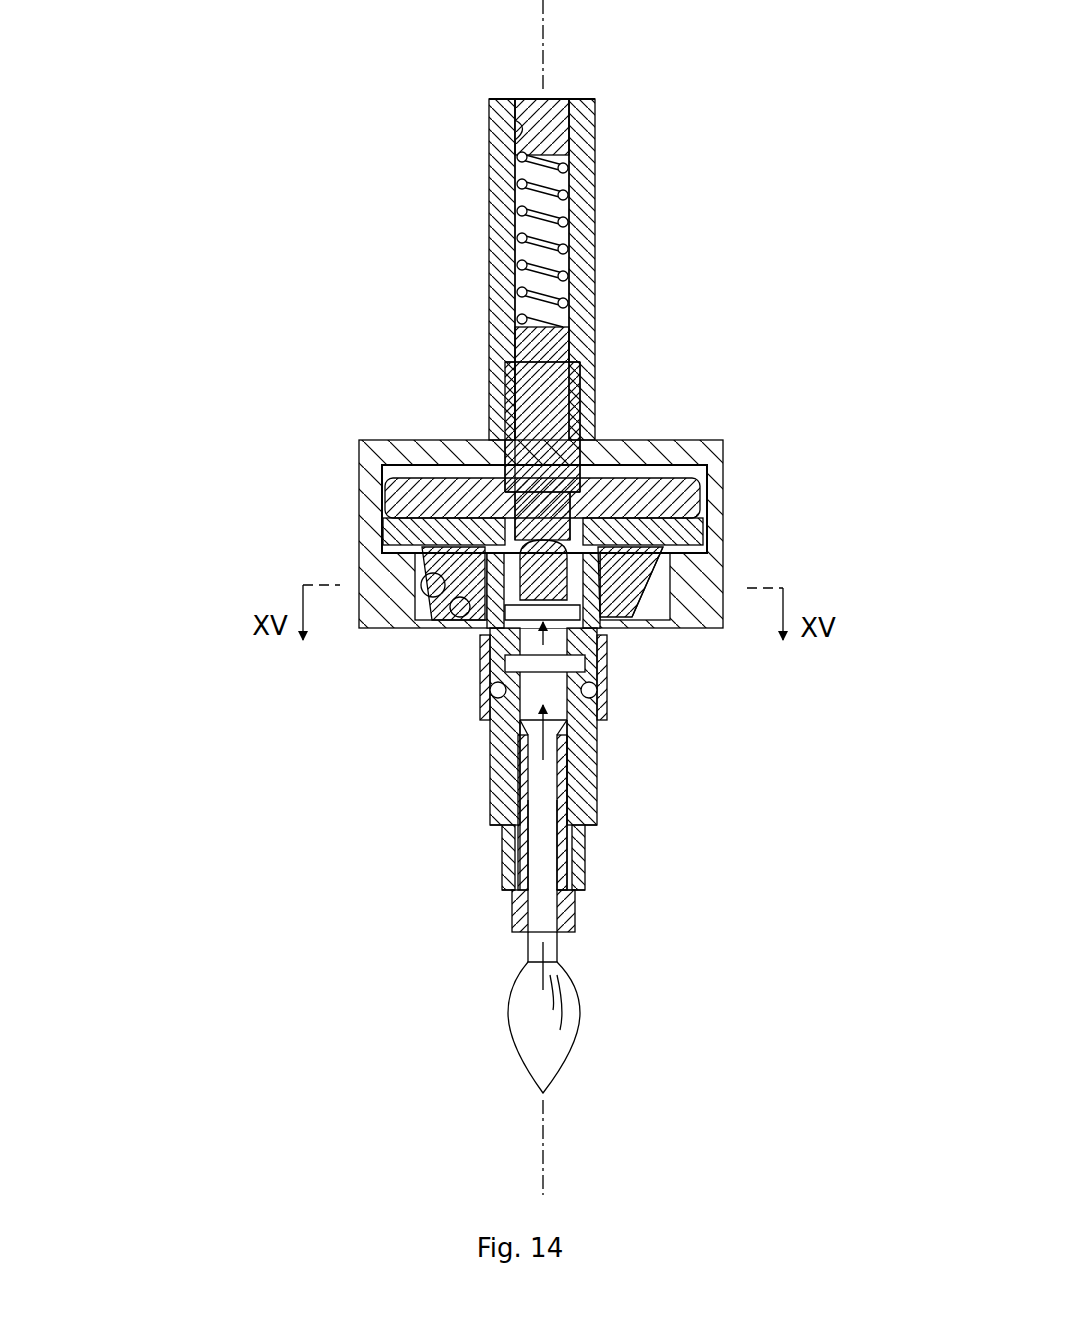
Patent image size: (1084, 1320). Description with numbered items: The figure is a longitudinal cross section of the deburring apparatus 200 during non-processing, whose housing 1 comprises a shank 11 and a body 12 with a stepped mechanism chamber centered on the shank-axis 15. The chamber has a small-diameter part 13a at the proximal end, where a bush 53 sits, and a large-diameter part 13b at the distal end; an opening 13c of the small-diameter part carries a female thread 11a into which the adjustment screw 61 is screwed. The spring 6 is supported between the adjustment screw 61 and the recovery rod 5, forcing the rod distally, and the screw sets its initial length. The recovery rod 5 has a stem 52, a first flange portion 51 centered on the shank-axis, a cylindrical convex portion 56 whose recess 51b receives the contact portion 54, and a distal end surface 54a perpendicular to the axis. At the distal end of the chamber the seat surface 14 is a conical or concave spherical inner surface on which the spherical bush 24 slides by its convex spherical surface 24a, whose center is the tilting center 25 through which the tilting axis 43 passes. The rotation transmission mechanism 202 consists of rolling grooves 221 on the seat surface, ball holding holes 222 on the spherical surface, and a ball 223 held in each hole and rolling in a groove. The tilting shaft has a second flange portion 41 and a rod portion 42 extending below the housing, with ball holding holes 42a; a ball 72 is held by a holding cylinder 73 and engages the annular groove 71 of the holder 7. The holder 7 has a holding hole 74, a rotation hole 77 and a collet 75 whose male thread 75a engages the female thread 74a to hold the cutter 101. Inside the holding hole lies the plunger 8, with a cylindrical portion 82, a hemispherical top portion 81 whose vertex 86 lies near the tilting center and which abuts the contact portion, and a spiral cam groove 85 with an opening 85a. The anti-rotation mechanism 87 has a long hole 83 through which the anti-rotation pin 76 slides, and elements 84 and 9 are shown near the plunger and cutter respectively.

The deburring apparatus 200 is at (448, 78).
The shank-axis 15 is at (548, 50).
The tilting axis 43 is at (549, 1134).
The housing 1 is at (524, 254).
The shank 11 is at (489, 180).
The female thread 11a is at (518, 128).
The opening 13c is at (567, 99).
The small-diameter part 13a is at (526, 242).
The large-diameter part 13b is at (675, 465).
The adjustment screw 61 is at (533, 128).
The spring 6 is at (570, 233).
The recovery rod 5 is at (458, 390).
The stem 52 is at (522, 345).
The recess 51b is at (518, 380).
The convex portion 56 is at (507, 430).
The first flange portion 51 is at (395, 485).
The bush 53 is at (582, 378).
The contact portion 54 is at (583, 432).
The distal end surface 54a is at (432, 470).
The vertex 86 is at (472, 470).
The tilting center 25 is at (562, 500).
The body 12 is at (725, 458).
The seat surface 14 is at (450, 630).
The rotation transmission mechanism 202 is at (434, 539).
The rolling groove 221 is at (392, 497).
The ball holding hole 222 is at (402, 532).
The ball 223 is at (422, 582).
The spherical bush 24 is at (632, 572).
The spherical surface 24a is at (645, 592).
The second flange portion 41 is at (690, 520).
The plunger 8 is at (645, 734).
The top portion 81 is at (605, 632).
The cam groove 85 is at (600, 800).
The opening 85a is at (603, 745).
The cylindrical portion 82 is at (600, 855).
The rod portion 42 is at (600, 830).
The ball holding hole 42a is at (505, 790).
The holder 7 is at (440, 795).
The holding hole 74 is at (500, 700).
The rotation hole 77 is at (520, 745).
The long hole 83 is at (588, 665).
The ball 84 is at (597, 692).
The anti-rotation pin 76 is at (488, 645).
The holding cylinder 73 is at (492, 662).
The ball 72 is at (502, 760).
The annular groove 71 is at (518, 830).
The anti-rotation mechanism 87 is at (530, 860).
The collet 75 is at (578, 935).
The male thread 75a is at (530, 905).
The female thread 74a is at (575, 893).
The liquid 9 is at (526, 958).
The cutter 101 is at (568, 1048).